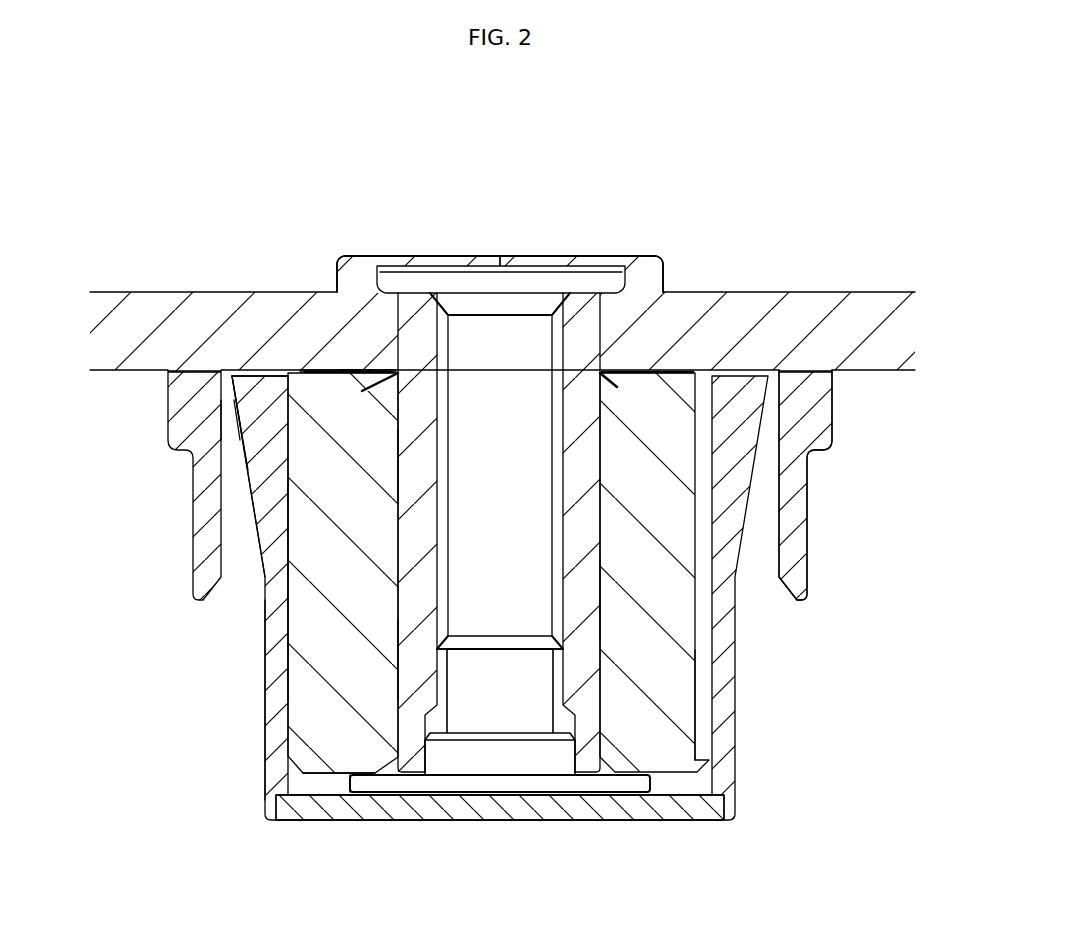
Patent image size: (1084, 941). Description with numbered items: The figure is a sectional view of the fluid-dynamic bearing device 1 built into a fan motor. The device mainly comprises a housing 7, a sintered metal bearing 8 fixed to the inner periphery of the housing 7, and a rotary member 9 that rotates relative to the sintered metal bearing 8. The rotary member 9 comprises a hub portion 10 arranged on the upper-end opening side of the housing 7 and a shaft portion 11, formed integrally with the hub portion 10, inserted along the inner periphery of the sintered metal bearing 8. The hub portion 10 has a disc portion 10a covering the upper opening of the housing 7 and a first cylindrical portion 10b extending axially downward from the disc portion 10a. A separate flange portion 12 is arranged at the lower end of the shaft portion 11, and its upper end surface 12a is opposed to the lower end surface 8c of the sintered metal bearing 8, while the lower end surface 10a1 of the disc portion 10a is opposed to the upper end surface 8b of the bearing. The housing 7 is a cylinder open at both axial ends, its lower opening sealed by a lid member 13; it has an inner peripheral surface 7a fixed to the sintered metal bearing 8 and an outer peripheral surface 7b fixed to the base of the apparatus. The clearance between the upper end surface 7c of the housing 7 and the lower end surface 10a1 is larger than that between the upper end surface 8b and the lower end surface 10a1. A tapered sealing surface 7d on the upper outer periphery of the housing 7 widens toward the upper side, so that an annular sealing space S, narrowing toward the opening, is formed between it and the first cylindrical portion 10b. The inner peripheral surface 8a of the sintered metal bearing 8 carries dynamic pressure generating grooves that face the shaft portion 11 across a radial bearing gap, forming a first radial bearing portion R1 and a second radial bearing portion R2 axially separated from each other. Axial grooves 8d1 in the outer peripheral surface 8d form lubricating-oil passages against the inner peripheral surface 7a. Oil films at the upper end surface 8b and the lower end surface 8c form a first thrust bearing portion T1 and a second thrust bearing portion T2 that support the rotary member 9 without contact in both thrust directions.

The fluid-dynamic bearing device 1 is at (305, 206).
The housing 7 is at (724, 627).
The inner peripheral surface of the housing 7a is at (291, 594).
The outer peripheral surface of the housing 7b is at (266, 714).
The upper end surface of the housing 7c is at (252, 373).
The tapered sealing surface 7d is at (238, 441).
The sintered metal bearing 8 is at (336, 722).
The inner peripheral surface of the sintered metal bearing 8a is at (588, 598).
The upper end surface of the sintered metal bearing 8b is at (368, 370).
The lower end surface of the sintered metal bearing 8c is at (322, 775).
The outer peripheral surface of the sintered metal bearing 8d is at (292, 522).
The axial groove 8d1 is at (698, 710).
The rotary member 9 is at (689, 261).
The hub portion 10 is at (802, 288).
The disc portion 10a is at (341, 352).
The lower end surface of the disc portion 10a1 is at (334, 372).
The first cylindrical portion 10b is at (822, 417).
The shaft portion 11 is at (590, 460).
The flange portion 12 is at (513, 786).
The upper end surface of the flange portion 12a is at (383, 763).
The lid member 13 is at (580, 808).
The sealing space S is at (228, 420).
The first thrust bearing portion T1 is at (357, 365).
The second thrust bearing portion T2 is at (357, 795).
The first radial bearing portion R1 is at (396, 467).
The second radial bearing portion R2 is at (396, 657).